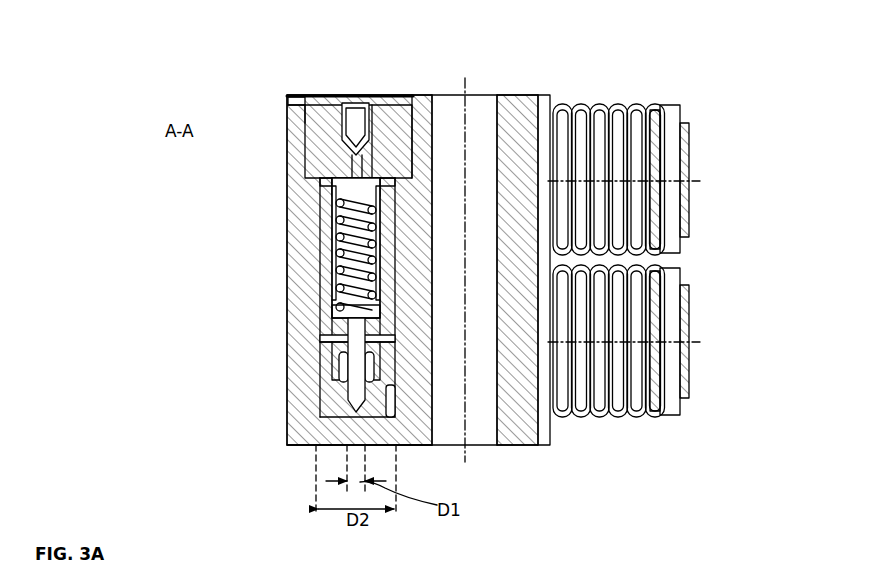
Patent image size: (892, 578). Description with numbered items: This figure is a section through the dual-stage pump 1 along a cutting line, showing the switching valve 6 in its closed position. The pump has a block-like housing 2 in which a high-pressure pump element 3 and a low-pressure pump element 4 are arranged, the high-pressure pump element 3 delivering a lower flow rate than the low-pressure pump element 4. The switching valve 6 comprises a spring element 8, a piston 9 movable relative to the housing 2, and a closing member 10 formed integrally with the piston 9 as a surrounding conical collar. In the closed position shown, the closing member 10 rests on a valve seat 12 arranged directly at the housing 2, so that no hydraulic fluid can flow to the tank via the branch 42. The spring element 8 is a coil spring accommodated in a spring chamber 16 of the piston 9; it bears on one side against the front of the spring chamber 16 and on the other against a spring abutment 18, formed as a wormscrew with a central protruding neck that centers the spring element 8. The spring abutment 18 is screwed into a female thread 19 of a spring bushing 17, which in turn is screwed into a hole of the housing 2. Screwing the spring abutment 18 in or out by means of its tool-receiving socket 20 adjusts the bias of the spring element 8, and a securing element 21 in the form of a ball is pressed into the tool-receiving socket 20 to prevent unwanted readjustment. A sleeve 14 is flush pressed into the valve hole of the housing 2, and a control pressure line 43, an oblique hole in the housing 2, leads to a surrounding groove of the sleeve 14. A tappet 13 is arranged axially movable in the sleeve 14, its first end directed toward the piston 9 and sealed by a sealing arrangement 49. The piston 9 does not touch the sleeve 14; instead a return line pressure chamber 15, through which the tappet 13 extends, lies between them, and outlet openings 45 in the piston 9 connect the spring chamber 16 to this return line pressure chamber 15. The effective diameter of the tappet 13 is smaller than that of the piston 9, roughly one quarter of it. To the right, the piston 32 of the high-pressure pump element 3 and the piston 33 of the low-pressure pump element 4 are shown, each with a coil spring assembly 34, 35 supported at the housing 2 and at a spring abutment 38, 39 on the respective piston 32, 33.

The dual-stage pump 1 is at (172, 272).
The housing 2 is at (523, 105).
The high-pressure pump element 3 is at (691, 373).
The low-pressure pump element 4 is at (691, 145).
The switching valve 6 is at (412, 97).
The spring element 8 is at (340, 292).
The piston 9 is at (335, 282).
The closing member 10 is at (325, 187).
The valve seat 12 is at (333, 196).
The tappet 13 is at (345, 395).
The sleeve 14 is at (323, 433).
The return line pressure chamber 15 is at (330, 348).
The spring chamber 16 is at (378, 255).
The spring bushing 17 is at (296, 105).
The spring abutment 18 is at (375, 150).
The female thread 19 is at (310, 135).
The tool-receiving socket 20 is at (345, 115).
The securing element 21 is at (358, 113).
The piston of the high-pressure pump element 32 is at (688, 318).
The piston of the low-pressure pump element 33 is at (688, 148).
The spring assembly 34 is at (630, 415).
The spring assembly 35 is at (580, 110).
The spring abutment 38 is at (680, 415).
The spring abutment 39 is at (672, 118).
The branch 42 is at (325, 240).
The control pressure line 43 is at (392, 395).
The outlet openings 45 is at (330, 333).
The sealing arrangement 49 is at (378, 362).